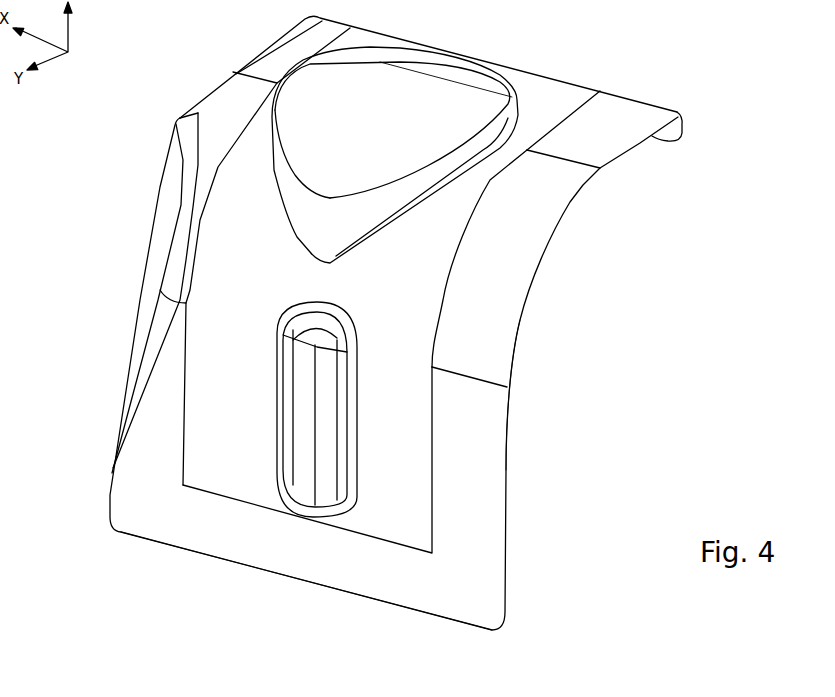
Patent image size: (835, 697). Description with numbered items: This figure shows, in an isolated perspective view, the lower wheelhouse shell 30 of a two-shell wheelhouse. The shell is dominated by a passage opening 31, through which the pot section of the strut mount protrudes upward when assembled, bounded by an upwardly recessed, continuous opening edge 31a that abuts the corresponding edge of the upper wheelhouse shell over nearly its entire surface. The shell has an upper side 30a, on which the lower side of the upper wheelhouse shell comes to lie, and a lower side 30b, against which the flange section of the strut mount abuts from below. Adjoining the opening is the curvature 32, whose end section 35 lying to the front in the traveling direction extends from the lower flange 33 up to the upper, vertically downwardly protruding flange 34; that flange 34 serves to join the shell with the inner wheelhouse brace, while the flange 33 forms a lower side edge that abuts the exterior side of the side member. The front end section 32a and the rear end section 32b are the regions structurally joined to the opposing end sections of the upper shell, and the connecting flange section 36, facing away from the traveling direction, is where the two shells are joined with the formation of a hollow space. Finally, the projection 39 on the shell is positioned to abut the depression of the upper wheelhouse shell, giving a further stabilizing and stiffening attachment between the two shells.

The lower wheelhouse shell 30 is at (552, 53).
The upper side 30a is at (582, 88).
The lower side 30b is at (562, 359).
The passage opening 31 is at (412, 101).
The opening edge 31a is at (306, 208).
The curvature 32 is at (492, 253).
The end section 32a is at (559, 300).
The end section 32b is at (109, 238).
The flange 33 is at (172, 530).
The flange 34 is at (668, 125).
The end section 35 is at (513, 320).
The connecting flange section 36 is at (157, 322).
The projection 39 is at (303, 478).